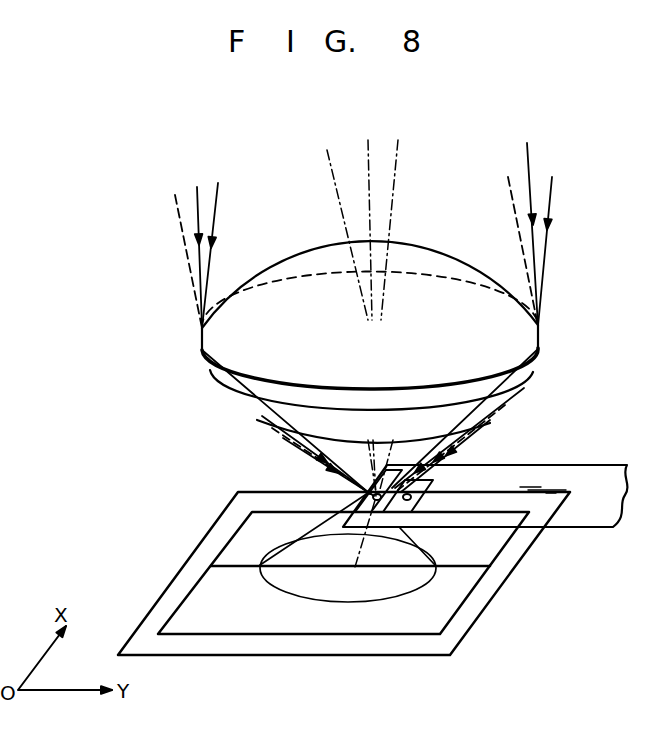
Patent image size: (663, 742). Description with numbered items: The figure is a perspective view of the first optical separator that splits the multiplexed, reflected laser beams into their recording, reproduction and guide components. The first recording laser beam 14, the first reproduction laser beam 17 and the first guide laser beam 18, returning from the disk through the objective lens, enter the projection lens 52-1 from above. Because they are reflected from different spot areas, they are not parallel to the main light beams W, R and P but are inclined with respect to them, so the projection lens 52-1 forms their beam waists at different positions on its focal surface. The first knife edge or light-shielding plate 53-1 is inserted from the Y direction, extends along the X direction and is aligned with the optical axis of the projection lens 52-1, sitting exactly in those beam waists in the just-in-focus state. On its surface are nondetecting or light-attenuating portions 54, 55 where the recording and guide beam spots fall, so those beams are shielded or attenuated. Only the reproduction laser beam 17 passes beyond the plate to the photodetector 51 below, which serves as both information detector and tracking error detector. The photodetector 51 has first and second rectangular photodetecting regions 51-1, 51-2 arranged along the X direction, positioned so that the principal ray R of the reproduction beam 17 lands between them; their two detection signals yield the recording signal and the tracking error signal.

The projection lens 52-1 is at (275, 268).
The first guide laser beam 18 is at (510, 191).
The first recording laser beam 14 is at (535, 180).
The first reproduction laser beam 17 is at (553, 197).
The first knife edge or light-shielding plate 53-1 is at (604, 522).
The nondetecting or light-attenuating portion 54 is at (413, 497).
The photodetector 51 is at (494, 557).
The first rectangular photodetecting region 51-1 is at (232, 546).
The second rectangular photodetecting region 51-2 is at (192, 599).
The nondetecting or light-attenuating portion 55 is at (361, 530).
The main light beam of the guide laser beam P is at (327, 152).
The main light beam of the recording laser beam W is at (368, 147).
The main light beam of the reproduction laser beam R is at (398, 148).